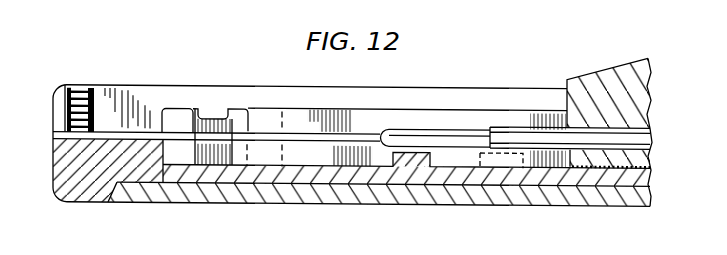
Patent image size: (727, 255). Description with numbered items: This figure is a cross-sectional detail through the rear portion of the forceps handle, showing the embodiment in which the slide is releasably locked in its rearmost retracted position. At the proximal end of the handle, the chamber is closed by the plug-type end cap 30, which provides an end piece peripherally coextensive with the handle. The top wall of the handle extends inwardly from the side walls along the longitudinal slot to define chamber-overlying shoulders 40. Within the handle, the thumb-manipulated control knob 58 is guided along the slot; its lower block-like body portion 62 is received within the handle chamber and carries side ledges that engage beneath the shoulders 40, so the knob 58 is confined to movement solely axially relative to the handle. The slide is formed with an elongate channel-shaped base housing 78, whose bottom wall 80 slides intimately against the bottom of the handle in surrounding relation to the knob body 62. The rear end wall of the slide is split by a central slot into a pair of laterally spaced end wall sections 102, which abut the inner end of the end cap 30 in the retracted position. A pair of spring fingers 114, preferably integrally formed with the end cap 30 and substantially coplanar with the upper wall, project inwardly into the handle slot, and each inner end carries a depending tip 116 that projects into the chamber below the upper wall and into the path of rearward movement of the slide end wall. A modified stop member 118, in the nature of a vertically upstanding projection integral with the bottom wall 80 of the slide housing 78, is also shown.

The plug-type end cap 30 is at (83, 208).
The chamber-overlying shoulders 40 is at (439, 116).
The control knob 58 is at (609, 59).
The block-like body portion 62 is at (653, 183).
The slide base housing 78 is at (247, 162).
The bottom wall 80 is at (328, 181).
The end wall sections 102 is at (175, 110).
The spring fingers 114 is at (191, 90).
The depending tip 116 is at (222, 113).
The stop member 118 is at (405, 153).